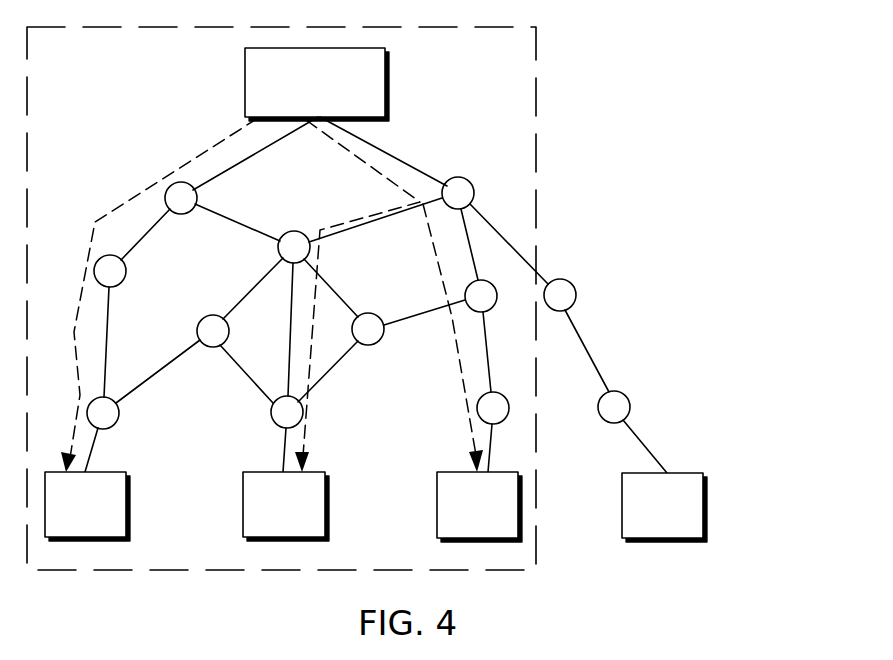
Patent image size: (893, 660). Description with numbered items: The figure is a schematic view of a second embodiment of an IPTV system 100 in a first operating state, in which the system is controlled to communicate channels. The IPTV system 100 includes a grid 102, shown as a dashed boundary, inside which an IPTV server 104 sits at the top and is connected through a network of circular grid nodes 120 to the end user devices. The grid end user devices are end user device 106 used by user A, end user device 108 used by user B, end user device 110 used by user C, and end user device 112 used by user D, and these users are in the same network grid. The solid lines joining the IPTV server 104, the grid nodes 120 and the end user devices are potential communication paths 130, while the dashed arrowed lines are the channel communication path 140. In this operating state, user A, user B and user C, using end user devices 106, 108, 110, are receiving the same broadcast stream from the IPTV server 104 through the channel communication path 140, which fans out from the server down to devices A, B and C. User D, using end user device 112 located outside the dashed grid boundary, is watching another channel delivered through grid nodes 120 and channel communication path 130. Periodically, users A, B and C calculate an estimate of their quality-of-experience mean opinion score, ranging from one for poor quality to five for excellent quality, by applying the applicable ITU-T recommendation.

The IPTV system 100 is at (720, 31).
The grid 102 is at (92, 97).
The IPTV server 104 is at (386, 88).
The end user device 106 is at (127, 507).
The end user device 108 is at (326, 507).
The end user device 110 is at (519, 508).
The end user device 112 is at (704, 508).
The grid nodes 120 is at (474, 192).
The potential communication paths 130 is at (238, 222).
The channel communication path 140 is at (155, 183).